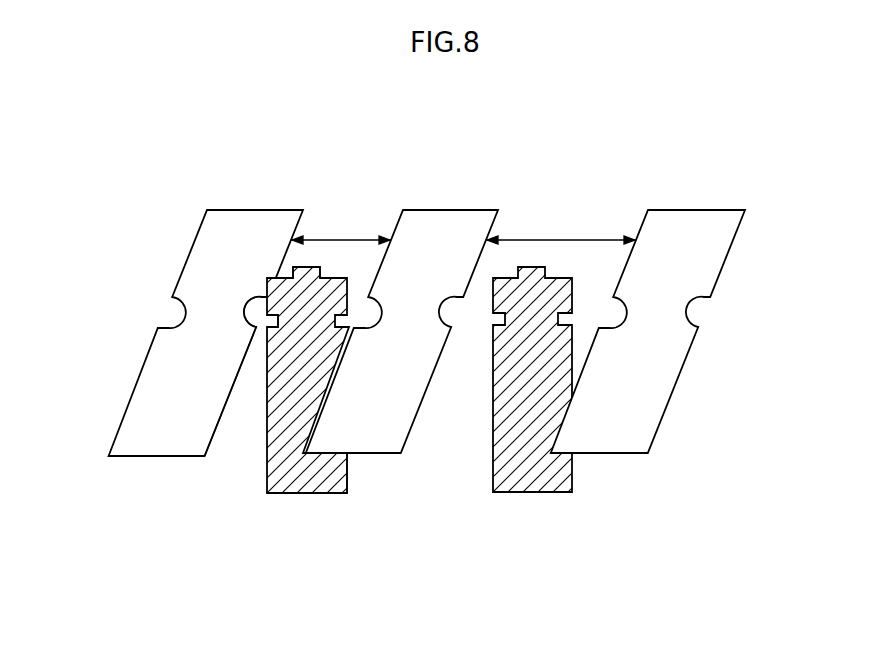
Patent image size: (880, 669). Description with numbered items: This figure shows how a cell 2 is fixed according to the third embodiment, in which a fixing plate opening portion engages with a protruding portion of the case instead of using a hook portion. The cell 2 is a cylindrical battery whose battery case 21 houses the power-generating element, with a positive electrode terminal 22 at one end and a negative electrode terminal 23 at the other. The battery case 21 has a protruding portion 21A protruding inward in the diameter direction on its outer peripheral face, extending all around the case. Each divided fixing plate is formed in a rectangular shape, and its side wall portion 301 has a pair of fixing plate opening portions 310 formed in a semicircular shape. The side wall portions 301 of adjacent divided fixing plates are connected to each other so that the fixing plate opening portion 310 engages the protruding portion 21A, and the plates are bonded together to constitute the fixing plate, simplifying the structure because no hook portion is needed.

The cell 2 is at (430, 401).
The battery case 21 is at (330, 468).
The protruding portion 21A is at (276, 321).
The positive electrode terminal 22 is at (310, 268).
The negative electrode terminal 23 is at (310, 493).
The side wall portion 301 is at (220, 418).
The fixing plate opening portion 310 is at (248, 306).